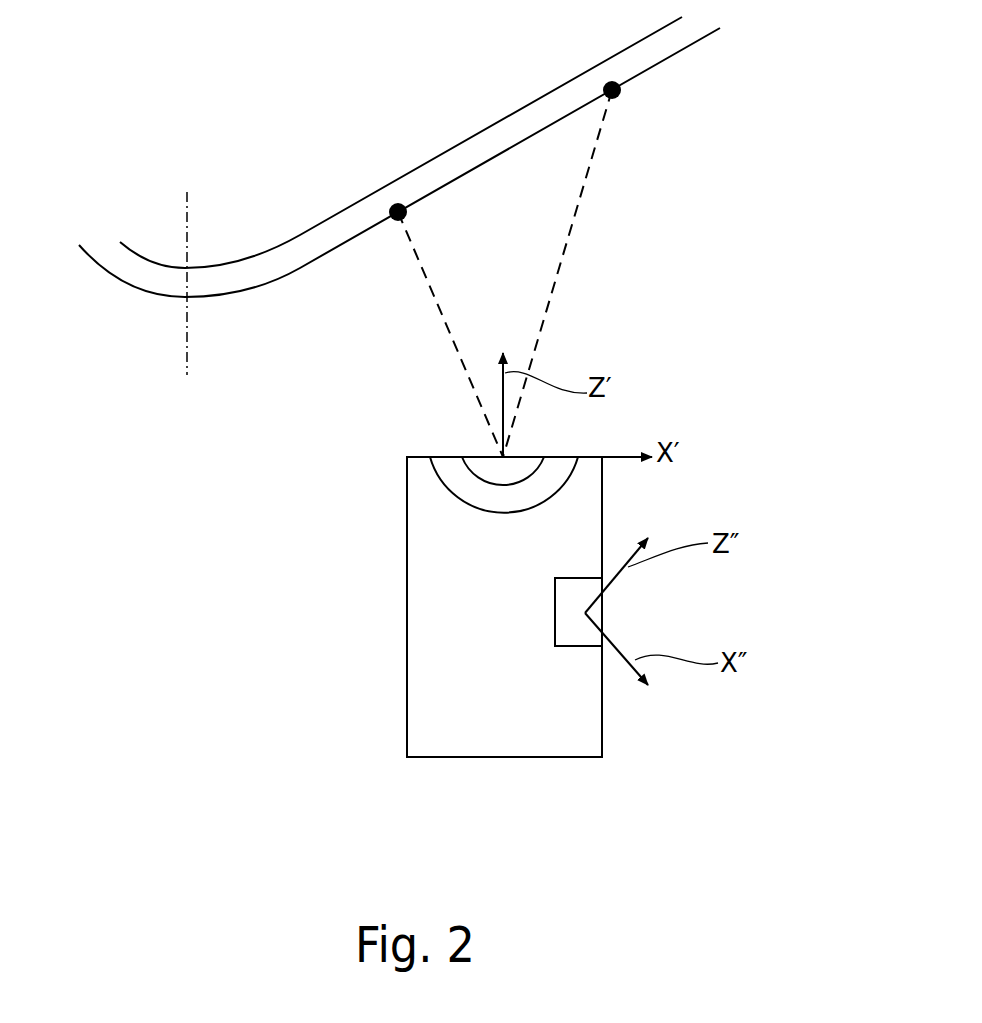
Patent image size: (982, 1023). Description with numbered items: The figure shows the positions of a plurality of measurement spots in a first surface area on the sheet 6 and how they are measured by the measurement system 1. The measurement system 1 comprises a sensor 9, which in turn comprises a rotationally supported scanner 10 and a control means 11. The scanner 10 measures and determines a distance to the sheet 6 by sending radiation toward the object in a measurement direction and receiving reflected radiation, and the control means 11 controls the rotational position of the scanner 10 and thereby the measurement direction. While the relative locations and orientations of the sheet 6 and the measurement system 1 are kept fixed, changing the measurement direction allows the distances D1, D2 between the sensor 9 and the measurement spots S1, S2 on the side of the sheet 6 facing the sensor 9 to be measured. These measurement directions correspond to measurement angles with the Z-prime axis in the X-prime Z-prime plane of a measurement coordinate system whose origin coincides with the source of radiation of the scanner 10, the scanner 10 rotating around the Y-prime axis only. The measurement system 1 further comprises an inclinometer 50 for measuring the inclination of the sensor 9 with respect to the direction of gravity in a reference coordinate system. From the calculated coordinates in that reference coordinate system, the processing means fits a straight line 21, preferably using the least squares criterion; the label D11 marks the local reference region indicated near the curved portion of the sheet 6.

The measurement system 1 is at (588, 733).
The sheet 6 is at (692, 33).
The sensor 9 is at (460, 485).
The scanner 10 is at (520, 465).
The control means 11 is at (545, 482).
The straight line 21 is at (662, 65).
The inclinometer 50 is at (602, 608).
The measurement spot S1 is at (620, 76).
The measurement spot S2 is at (397, 202).
The distance D1 is at (567, 250).
The distance D2 is at (450, 332).
The reference distances D11, D12 D11 is at (276, 284).